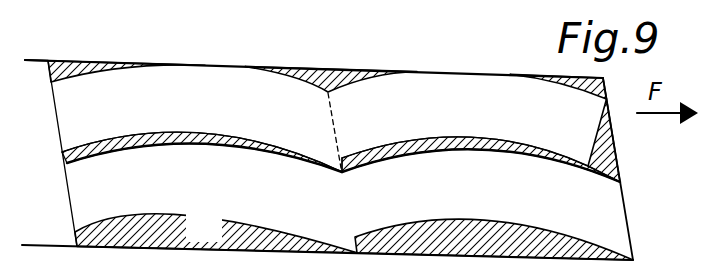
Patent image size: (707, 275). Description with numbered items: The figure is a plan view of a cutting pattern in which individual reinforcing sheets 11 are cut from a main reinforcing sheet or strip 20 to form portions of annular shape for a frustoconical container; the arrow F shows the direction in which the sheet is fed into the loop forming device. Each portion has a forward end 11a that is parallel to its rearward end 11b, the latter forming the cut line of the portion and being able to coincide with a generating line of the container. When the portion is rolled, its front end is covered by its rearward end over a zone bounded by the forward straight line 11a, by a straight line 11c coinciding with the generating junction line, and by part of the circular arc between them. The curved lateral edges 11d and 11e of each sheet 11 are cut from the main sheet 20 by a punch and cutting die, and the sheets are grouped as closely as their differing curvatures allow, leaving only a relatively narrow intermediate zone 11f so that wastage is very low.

The main reinforcing sheet 20 is at (40, 72).
The reinforcing sheet 11 is at (199, 88).
The forward end 11a is at (617, 155).
The rearward end 11b is at (58, 107).
The straight line 11c is at (594, 147).
The lateral edge 11d is at (443, 70).
The lateral edge 11e is at (434, 142).
The intermediate zone 11f is at (417, 155).